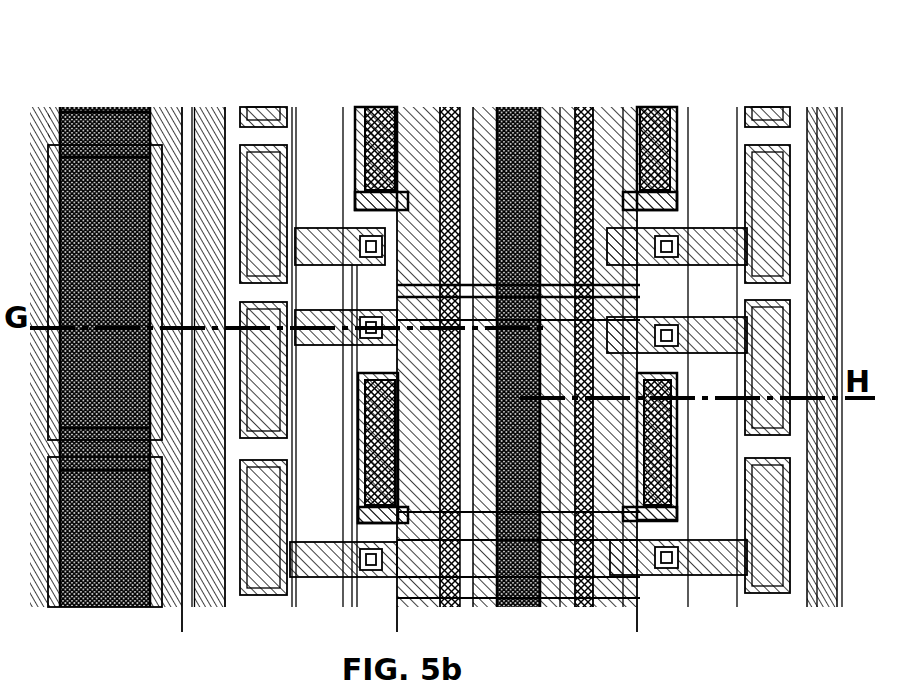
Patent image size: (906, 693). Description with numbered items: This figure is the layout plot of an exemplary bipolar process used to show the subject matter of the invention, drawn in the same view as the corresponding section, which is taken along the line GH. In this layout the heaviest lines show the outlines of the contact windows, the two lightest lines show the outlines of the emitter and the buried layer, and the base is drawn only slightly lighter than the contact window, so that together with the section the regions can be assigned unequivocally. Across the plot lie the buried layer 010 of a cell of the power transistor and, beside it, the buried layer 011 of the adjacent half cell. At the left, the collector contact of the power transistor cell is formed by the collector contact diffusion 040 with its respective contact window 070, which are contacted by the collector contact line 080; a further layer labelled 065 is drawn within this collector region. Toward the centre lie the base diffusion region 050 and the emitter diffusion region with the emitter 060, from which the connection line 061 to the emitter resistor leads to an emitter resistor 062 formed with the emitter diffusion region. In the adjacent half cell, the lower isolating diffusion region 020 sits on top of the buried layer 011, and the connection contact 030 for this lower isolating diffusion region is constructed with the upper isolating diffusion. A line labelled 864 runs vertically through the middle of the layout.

The collector contact diffusion 040 is at (140, 201).
The contact window 070 is at (140, 248).
The contact layer 065 is at (150, 291).
The collector contact line 080 is at (106, 374).
The base diffusion region 050 is at (195, 448).
The emitter 060 is at (298, 330).
The connection line to the emitter resistor 061 is at (312, 348).
The emitter resistor 062 is at (362, 374).
The buried layer 010 is at (235, 625).
The word line 864 is at (472, 515).
The lower isolating diffusion region 020 is at (668, 422).
The connection contact 030 is at (668, 448).
The buried layer 011 is at (850, 623).